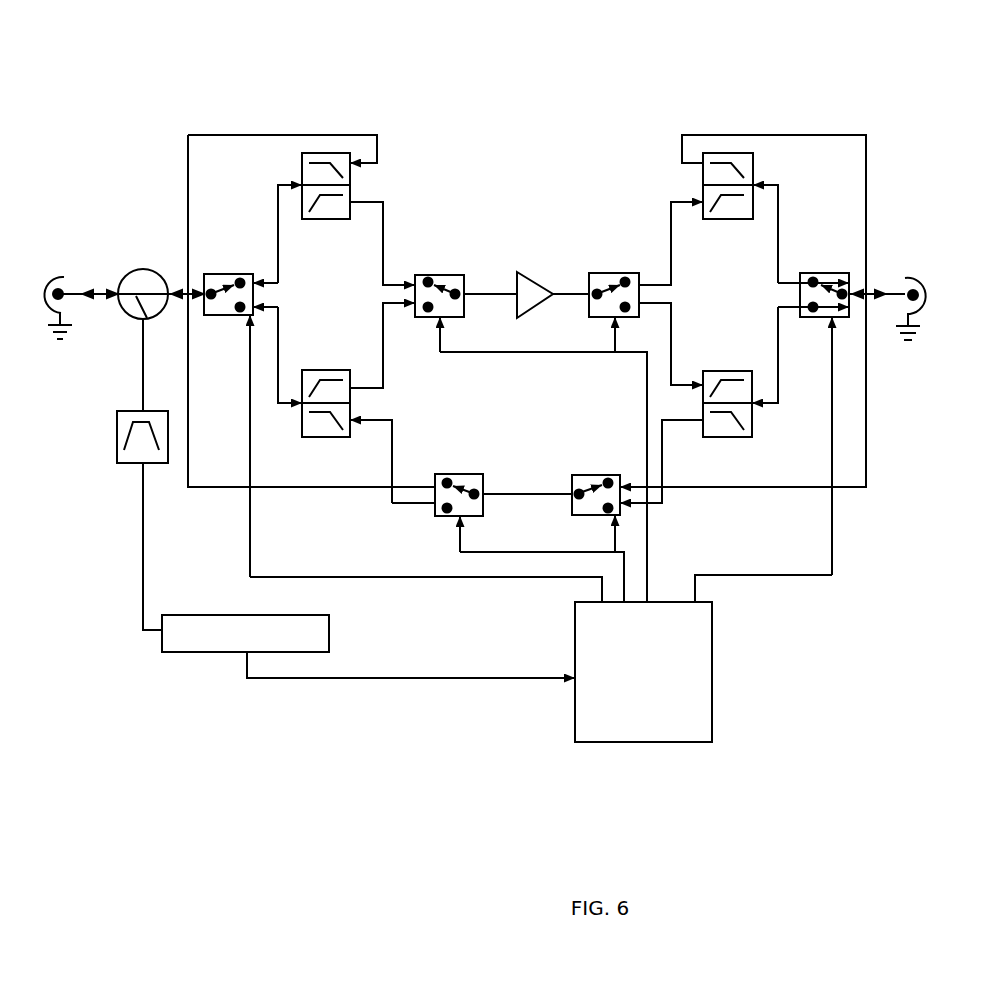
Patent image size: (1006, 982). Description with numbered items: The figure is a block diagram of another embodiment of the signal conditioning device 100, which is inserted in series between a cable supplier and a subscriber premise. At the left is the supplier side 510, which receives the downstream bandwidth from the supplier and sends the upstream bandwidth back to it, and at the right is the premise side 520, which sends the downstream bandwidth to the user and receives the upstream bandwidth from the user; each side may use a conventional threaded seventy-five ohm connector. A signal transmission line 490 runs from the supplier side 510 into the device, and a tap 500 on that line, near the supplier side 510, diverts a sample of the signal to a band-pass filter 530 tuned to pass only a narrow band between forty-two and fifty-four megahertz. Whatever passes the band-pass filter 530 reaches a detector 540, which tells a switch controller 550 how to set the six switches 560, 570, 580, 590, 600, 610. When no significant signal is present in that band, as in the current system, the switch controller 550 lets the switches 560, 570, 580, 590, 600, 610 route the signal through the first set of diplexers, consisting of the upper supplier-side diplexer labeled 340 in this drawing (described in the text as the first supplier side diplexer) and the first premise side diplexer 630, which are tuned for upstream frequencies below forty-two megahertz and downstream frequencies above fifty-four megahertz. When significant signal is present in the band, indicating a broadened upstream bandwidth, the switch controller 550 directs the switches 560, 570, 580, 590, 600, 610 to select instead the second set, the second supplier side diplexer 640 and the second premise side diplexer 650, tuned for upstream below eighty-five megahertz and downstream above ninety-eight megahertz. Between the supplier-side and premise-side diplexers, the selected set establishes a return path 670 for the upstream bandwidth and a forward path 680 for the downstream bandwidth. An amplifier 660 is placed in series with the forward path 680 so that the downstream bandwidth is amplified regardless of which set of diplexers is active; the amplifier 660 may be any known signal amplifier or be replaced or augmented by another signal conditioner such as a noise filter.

The signal conditioning device 100 is at (630, 84).
The diplexer filter 340 is at (302, 165).
The signal transmission line 490 is at (96, 289).
The tap 500 is at (122, 310).
The supplier side 510 is at (64, 277).
The premise side 520 is at (905, 278).
The band-pass filter 530 is at (117, 437).
The detector 540 is at (200, 615).
The switch controller 550 is at (643, 672).
The switch 560 is at (222, 274).
The switch 570 is at (815, 273).
The switch 580 is at (437, 275).
The switch 590 is at (600, 273).
The switch 600 is at (442, 474).
The switch 610 is at (590, 475).
The first premise side diplexer 630 is at (753, 167).
The second supplier side diplexer 640 is at (323, 437).
The second premise side diplexer 650 is at (740, 437).
The amplifier 660 is at (540, 285).
The return path 670 is at (522, 493).
The forward path 680 is at (493, 293).